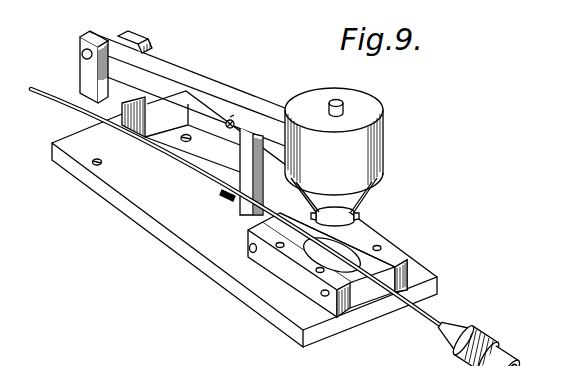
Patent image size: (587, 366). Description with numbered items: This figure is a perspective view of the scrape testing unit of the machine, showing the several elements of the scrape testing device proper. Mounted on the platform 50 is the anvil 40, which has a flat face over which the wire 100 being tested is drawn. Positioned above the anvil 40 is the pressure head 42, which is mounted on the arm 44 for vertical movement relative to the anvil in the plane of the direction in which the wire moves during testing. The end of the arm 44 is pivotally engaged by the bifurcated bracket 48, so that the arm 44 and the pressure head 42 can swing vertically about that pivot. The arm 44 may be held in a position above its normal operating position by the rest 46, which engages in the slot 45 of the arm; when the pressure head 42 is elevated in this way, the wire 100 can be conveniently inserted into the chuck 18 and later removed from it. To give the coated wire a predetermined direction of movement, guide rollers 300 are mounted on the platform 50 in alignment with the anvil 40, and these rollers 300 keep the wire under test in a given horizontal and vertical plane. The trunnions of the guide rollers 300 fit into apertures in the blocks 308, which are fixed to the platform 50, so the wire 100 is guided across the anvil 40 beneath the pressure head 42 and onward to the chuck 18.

The chuck 18 is at (483, 333).
The anvil 40 is at (352, 250).
The pressure head 42 is at (383, 137).
The arm 44 is at (218, 92).
The slot 45 is at (226, 125).
The rest 46 is at (243, 163).
The bifurcated bracket 48 is at (81, 71).
The platform 50 is at (112, 197).
The wire 100 is at (428, 312).
The guide rollers 300 is at (248, 237).
The blocks 308 is at (285, 277).